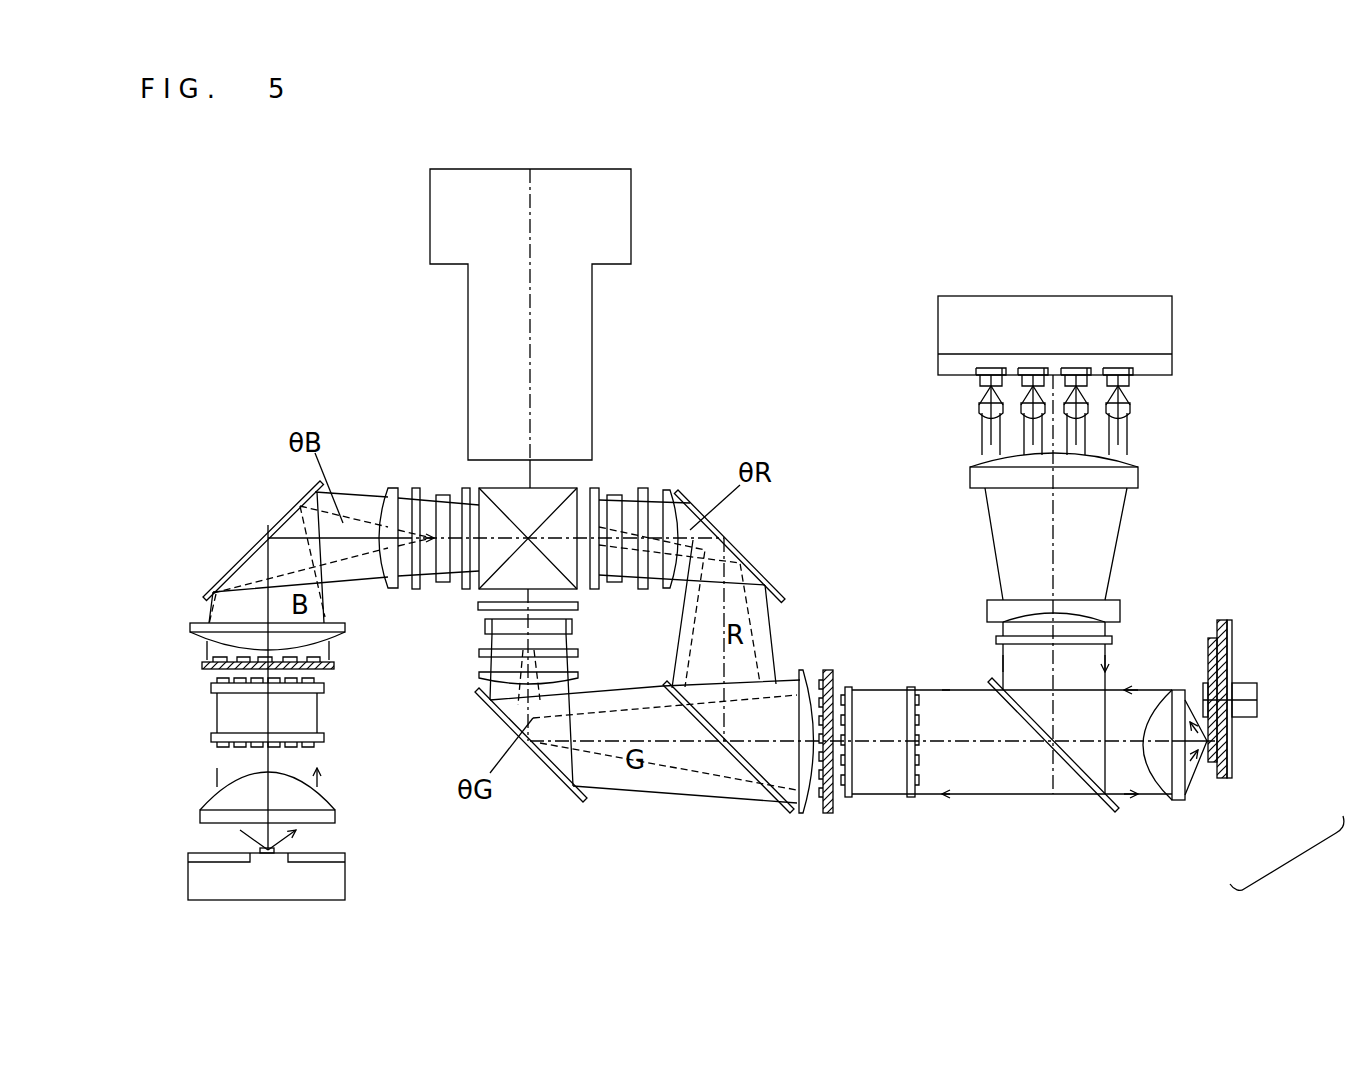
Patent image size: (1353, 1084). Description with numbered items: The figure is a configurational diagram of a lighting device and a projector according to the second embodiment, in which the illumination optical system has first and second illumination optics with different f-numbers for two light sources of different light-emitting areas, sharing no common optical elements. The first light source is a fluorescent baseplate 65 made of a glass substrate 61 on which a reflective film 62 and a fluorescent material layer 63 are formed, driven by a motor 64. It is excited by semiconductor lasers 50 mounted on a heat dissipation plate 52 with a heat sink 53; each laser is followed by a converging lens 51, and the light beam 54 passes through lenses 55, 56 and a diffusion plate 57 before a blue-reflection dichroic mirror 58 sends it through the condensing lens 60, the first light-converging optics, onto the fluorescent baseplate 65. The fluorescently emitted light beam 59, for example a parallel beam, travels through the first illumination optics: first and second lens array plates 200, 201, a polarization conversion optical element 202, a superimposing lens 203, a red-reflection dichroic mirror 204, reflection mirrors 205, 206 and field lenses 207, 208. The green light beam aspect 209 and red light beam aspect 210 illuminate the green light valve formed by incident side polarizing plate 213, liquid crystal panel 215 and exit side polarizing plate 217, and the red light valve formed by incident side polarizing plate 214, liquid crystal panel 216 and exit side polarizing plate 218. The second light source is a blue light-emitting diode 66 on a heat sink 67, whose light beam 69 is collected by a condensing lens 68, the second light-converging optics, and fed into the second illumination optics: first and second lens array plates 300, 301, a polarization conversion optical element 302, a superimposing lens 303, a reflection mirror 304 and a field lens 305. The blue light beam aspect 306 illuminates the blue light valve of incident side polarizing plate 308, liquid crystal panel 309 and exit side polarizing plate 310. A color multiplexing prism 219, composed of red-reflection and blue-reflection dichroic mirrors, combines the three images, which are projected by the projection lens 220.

The projection lens 220 is at (467, 293).
The exit side polarizing plate 310 is at (459, 478).
The liquid crystal panel 309 is at (437, 490).
The incident side polarizing plate 308 is at (410, 487).
The light beam aspect of illumination light of a blue component 306 is at (358, 493).
The field lens 305 is at (387, 590).
The reflection mirror 304 is at (270, 525).
The superimposing lens 303 is at (205, 620).
The polarization conversion optical element 302 is at (202, 665).
The second lens array plate 301 is at (211, 688).
The first lens array plate 300 is at (211, 740).
The light beam from the light-emitting diode 69 is at (323, 773).
The condensing lens 68 is at (336, 813).
The light-emitting diode 66 is at (275, 852).
The heat sink 67 is at (340, 885).
The color multiplexing prism 219 is at (588, 487).
The exit side polarizing plate 218 is at (605, 485).
The liquid crystal panel 216 is at (632, 487).
The incident side polarizing plate 214 is at (660, 487).
The field lens 208 is at (667, 587).
The reflection mirror 206 is at (763, 570).
The exit side polarizing plate 217 is at (475, 608).
The liquid crystal panel 215 is at (483, 630).
The incident side polarizing plate 213 is at (580, 653).
The field lens 207 is at (478, 680).
The light beam aspect of illumination light of green component 209 is at (680, 797).
The reflection mirror 205 is at (553, 775).
The light beam aspect of illumination light of red component 210 is at (773, 660).
The red-reflection dichroic mirror 204 is at (782, 808).
The superimposing lens 203 is at (799, 816).
The polarization conversion optical element 202 is at (824, 815).
The second lens array plate 201 is at (847, 802).
The first lens array plate 200 is at (908, 802).
The heat sink 53 is at (950, 316).
The heat dissipation plate 52 is at (938, 365).
The semiconductor laser 50 is at (975, 384).
The converging lens 51 is at (978, 410).
The light beam from the semiconductor laser 54 is at (975, 436).
The lens 55 is at (970, 483).
The lens 56 is at (987, 600).
The diffusion plate 57 is at (997, 640).
The blue-reflection dichroic mirror 58 is at (988, 684).
The light beam fluorescently emitted from the fluorescent baseplate 59 is at (1145, 690).
The condensing lens 60 is at (1177, 800).
The fluorescent material layer 63 is at (1208, 762).
The reflective film 62 is at (1219, 778).
The glass substrate 61 is at (1231, 776).
The motor 64 is at (1257, 717).
The fluorescent baseplate 65 is at (1292, 866).